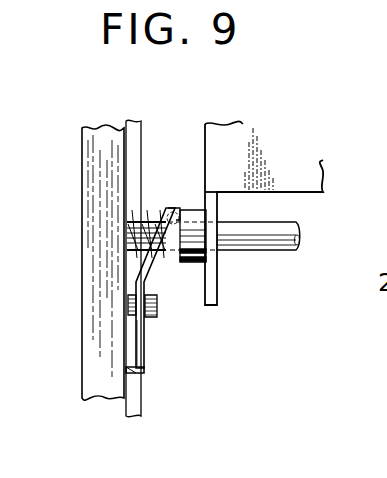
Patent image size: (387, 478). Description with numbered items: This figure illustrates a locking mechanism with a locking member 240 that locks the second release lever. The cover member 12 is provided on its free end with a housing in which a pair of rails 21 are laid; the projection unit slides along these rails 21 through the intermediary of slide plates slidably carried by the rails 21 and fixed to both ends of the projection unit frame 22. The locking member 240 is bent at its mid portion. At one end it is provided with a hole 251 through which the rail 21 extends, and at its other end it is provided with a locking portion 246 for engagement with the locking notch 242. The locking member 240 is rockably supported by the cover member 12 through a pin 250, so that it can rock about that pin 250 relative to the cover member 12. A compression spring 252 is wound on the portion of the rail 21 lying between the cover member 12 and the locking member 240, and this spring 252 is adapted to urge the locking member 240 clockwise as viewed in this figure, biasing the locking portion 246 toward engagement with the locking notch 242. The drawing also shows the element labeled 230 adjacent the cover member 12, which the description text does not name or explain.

The cover member 12 is at (96, 364).
The rail 21 is at (255, 238).
The projection unit frame 22 is at (231, 140).
The plate 230 is at (141, 392).
The locking member 240 is at (136, 278).
The locking notch 242 is at (145, 371).
The locking portion 246 is at (138, 352).
The pin 250 is at (158, 309).
The hole 251 is at (182, 210).
The compression spring 252 is at (157, 210).